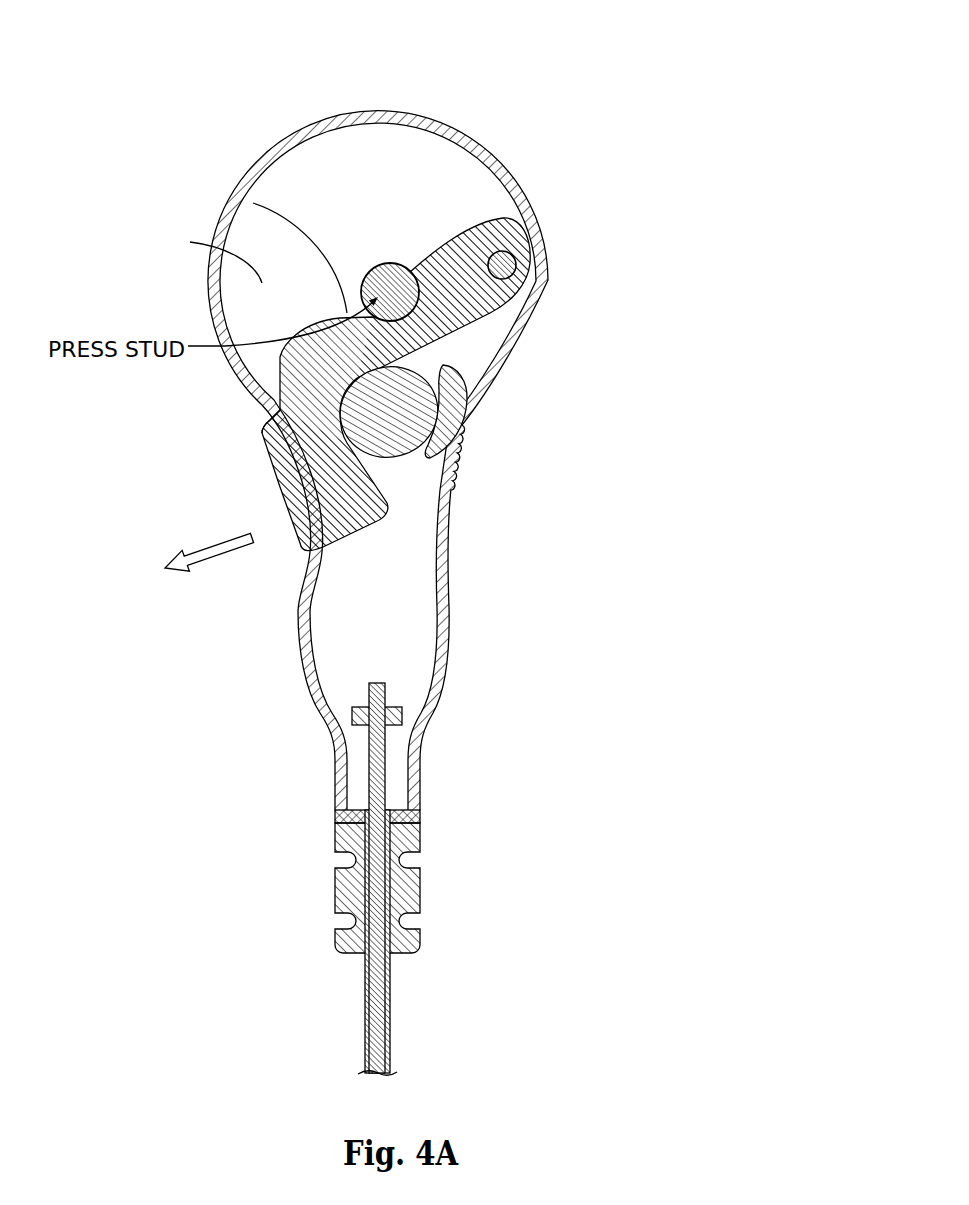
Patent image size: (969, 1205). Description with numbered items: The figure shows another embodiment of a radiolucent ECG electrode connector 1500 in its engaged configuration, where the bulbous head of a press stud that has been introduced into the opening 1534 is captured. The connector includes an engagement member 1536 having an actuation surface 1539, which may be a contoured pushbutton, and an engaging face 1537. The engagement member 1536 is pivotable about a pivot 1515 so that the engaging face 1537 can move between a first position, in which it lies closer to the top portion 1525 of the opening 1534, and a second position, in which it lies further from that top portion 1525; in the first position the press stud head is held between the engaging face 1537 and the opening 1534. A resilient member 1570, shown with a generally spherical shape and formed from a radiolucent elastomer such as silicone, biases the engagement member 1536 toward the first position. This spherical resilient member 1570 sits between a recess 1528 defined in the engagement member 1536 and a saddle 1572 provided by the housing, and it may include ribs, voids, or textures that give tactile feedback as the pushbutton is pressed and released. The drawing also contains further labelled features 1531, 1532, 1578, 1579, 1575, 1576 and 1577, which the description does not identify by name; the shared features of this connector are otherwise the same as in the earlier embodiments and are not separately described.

The radiolucent ECG electrode connector 1500 is at (593, 113).
The bulb cavity 1531 is at (335, 167).
The opening 1534 is at (253, 203).
The inner wall 1532 is at (190, 242).
The top portion of opening 1525 is at (387, 263).
The pivot 1515 is at (513, 270).
The engaging face 1537 is at (427, 332).
The recess 1528 is at (330, 412).
The engagement member 1536 is at (262, 433).
The actuation surface 1539 is at (289, 480).
The resilient member 1570 is at (383, 443).
The saddle 1572 is at (457, 403).
The cross pin 1578 is at (402, 714).
The plunger base 1579 is at (420, 840).
The needle 1575 is at (358, 1001).
The needle sheath 1576 is at (392, 982).
The needle core 1577 is at (380, 1026).